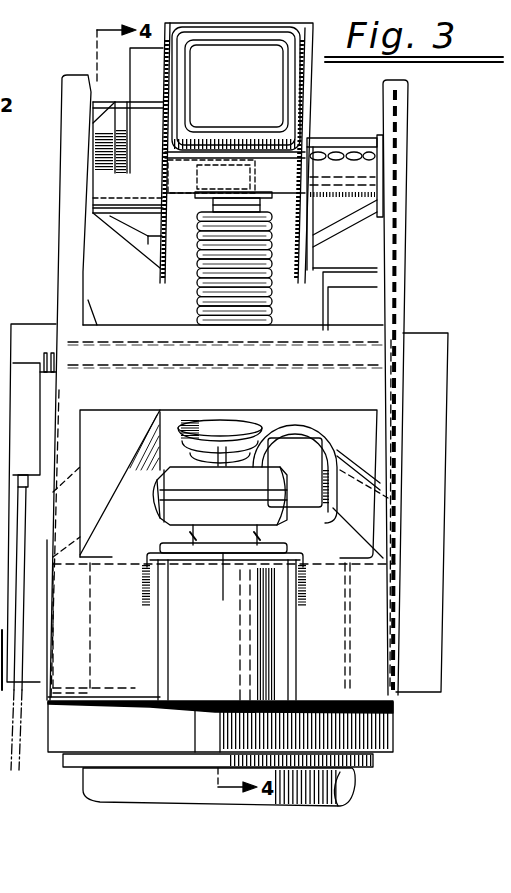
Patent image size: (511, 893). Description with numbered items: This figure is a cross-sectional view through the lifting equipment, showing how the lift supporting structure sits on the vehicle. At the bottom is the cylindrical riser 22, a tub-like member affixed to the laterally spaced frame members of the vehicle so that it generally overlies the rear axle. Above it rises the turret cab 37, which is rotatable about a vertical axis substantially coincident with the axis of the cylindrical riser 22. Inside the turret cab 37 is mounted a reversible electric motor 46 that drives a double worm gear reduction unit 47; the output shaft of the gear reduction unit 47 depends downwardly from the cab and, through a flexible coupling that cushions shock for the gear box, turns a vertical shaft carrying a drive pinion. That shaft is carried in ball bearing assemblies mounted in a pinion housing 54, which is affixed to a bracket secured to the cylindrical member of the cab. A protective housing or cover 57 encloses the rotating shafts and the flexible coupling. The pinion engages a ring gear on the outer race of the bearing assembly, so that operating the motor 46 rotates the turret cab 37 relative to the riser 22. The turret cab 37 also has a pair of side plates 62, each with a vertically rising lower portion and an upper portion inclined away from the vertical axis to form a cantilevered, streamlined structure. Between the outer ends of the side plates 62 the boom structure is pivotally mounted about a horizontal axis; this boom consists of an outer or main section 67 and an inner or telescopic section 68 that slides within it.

The cylindrical riser 22 is at (102, 785).
The turret cab 37 is at (412, 296).
The reversible electric motor 46 is at (311, 505).
The double worm gear reduction unit 47 is at (190, 513).
The pinion housing 54 is at (203, 738).
The protective housing or cover 57 is at (212, 641).
The side plates 62 is at (59, 276).
The outer or main boom section 67 is at (300, 122).
The inner or telescopic boom section 68 is at (228, 135).